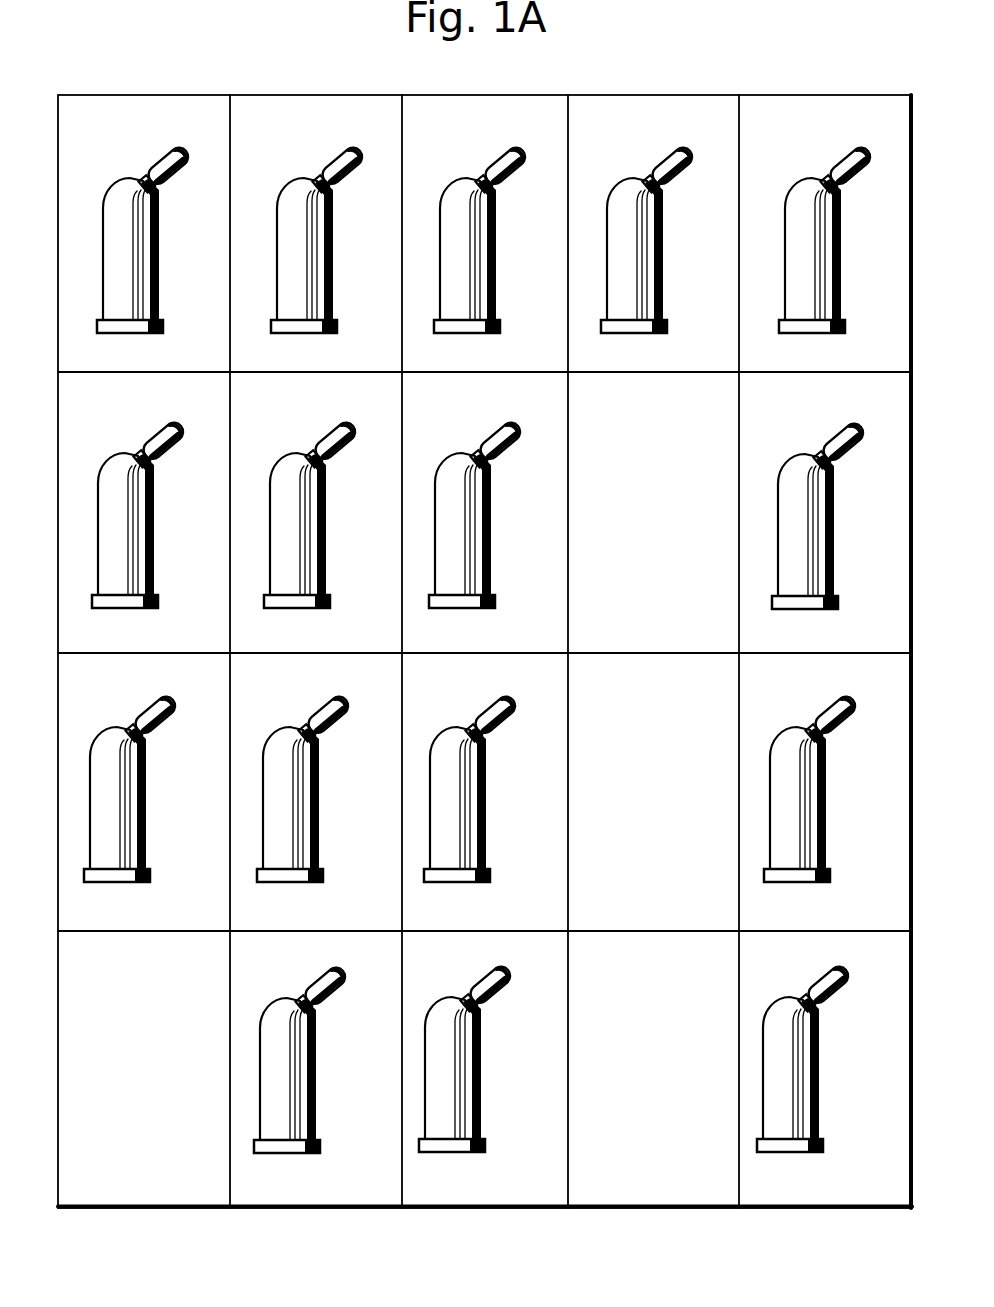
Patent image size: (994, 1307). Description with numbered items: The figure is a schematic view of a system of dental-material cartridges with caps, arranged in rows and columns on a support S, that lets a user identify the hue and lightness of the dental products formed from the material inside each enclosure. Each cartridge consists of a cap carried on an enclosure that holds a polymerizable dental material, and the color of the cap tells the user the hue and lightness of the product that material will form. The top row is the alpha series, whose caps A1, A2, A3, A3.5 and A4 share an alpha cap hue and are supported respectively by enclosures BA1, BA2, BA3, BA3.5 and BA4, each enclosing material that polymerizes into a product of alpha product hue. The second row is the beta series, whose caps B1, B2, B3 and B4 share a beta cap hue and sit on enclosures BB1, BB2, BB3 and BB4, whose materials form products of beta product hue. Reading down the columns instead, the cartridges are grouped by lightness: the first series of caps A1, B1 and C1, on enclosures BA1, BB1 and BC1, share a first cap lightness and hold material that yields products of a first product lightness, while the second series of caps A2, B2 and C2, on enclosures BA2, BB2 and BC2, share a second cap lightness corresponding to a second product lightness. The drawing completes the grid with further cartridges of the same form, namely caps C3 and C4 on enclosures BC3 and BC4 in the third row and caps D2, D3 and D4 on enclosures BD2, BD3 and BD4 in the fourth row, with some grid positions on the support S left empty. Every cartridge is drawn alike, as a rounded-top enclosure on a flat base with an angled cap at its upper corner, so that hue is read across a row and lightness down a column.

The support S is at (755, 95).
The cap A1 is at (157, 226).
The enclosure BA1 is at (195, 243).
The cap A2 is at (325, 225).
The enclosure BA2 is at (333, 265).
The cap A3 is at (496, 225).
The enclosure BA3 is at (538, 246).
The cap A3.5 is at (651, 244).
The enclosure BA3.5 is at (663, 290).
The cap A4 is at (832, 226).
The enclosure BA4 is at (880, 260).
The cap B1 is at (153, 499).
The enclosure BB1 is at (154, 540).
The cap B2 is at (326, 499).
The enclosure BB2 is at (326, 540).
The cap B3 is at (491, 499).
The enclosure BB3 is at (533, 525).
The cap B4 is at (830, 500).
The enclosure BB4 is at (875, 525).
The cap C1 is at (145, 777).
The enclosure BC1 is at (146, 828).
The cap C2 is at (321, 777).
The enclosure BC2 is at (319, 828).
The dental composite capsule shade C3 is at (487, 773).
The capsule body for shade C3 BC3 is at (486, 826).
The dental composite capsule shade C4 is at (826, 773).
The capsule body for shade C4 BC4 is at (826, 826).
The dental composite capsule shade D2 is at (314, 1048).
The capsule body for shade D2 BD2 is at (357, 1070).
The dental composite capsule shade D3 is at (482, 1047).
The capsule body for shade D3 BD3 is at (522, 1066).
The dental composite capsule shade D4 is at (824, 1047).
The capsule body for shade D4 BD4 is at (819, 1097).